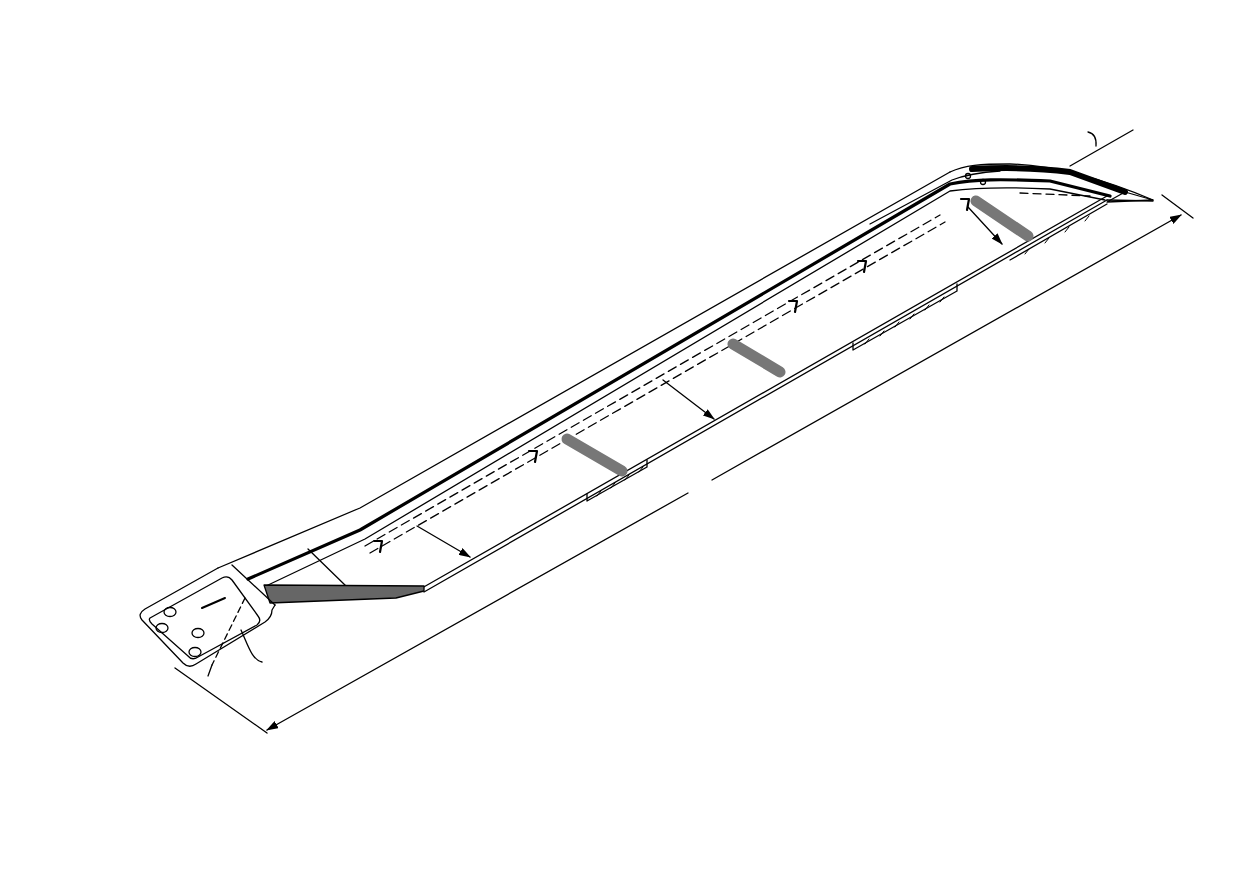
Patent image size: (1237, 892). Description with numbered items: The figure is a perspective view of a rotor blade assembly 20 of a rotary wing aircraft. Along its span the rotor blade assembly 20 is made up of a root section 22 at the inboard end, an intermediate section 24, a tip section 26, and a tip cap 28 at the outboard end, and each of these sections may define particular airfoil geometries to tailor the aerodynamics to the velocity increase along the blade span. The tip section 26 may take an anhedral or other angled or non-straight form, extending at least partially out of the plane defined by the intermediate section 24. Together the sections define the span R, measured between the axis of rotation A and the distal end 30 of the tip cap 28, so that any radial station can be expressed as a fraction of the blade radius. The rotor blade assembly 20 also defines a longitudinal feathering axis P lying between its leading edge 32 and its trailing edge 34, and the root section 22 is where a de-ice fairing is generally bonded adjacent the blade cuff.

The rotor blade assembly 20 is at (630, 293).
The root section 22 is at (255, 546).
The intermediate section 24 is at (607, 360).
The tip section 26 is at (957, 166).
The tip cap 28 is at (1116, 169).
The distal end 30 is at (1145, 190).
The leading edge 32 is at (710, 305).
The trailing edge 34 is at (750, 401).